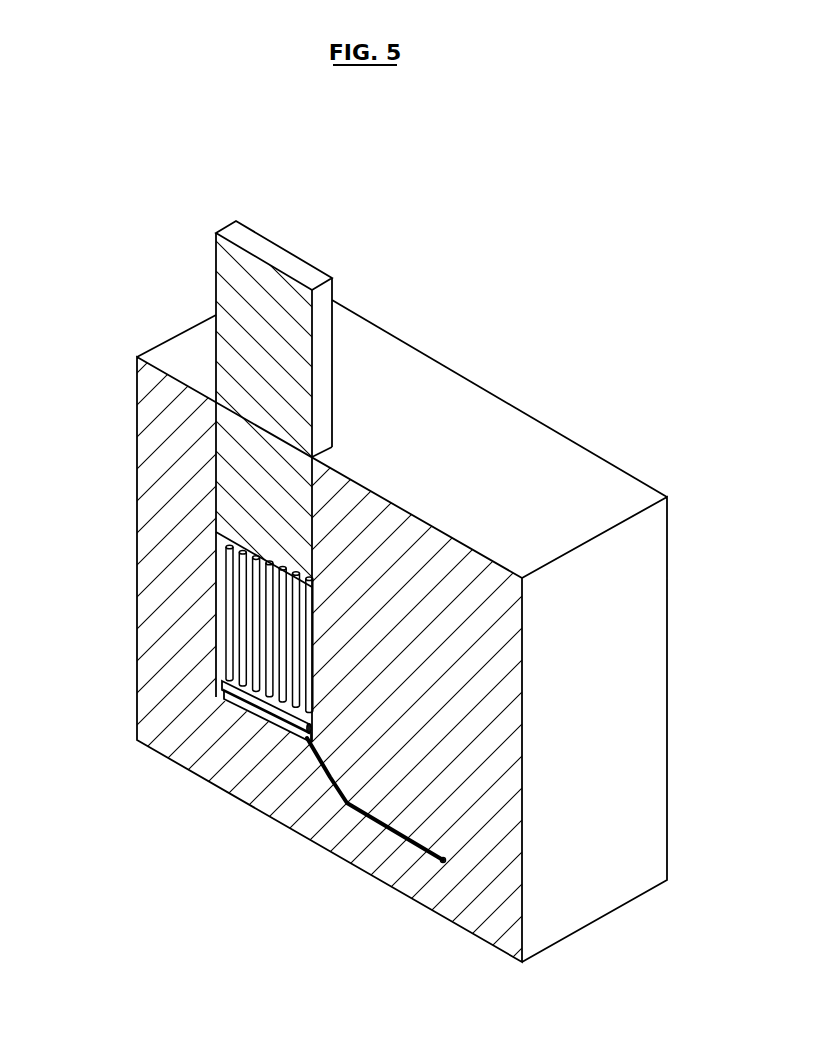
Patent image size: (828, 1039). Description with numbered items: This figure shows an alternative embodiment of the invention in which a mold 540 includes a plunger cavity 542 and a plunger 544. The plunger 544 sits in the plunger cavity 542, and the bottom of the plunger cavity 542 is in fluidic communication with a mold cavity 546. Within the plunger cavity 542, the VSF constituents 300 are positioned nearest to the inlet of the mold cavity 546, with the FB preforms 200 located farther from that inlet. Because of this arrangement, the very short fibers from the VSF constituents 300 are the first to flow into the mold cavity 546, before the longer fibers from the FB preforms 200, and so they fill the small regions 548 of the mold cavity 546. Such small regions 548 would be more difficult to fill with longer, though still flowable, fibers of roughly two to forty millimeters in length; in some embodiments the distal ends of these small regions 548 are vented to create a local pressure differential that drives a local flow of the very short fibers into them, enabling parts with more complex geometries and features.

The mold 540 is at (160, 216).
The plunger 544 is at (322, 355).
The plunger cavity 542 is at (194, 629).
The FB preforms 200 is at (250, 626).
The VSF constituents 300 is at (258, 700).
The mold cavity 546 is at (336, 828).
The small regions 548 is at (440, 862).